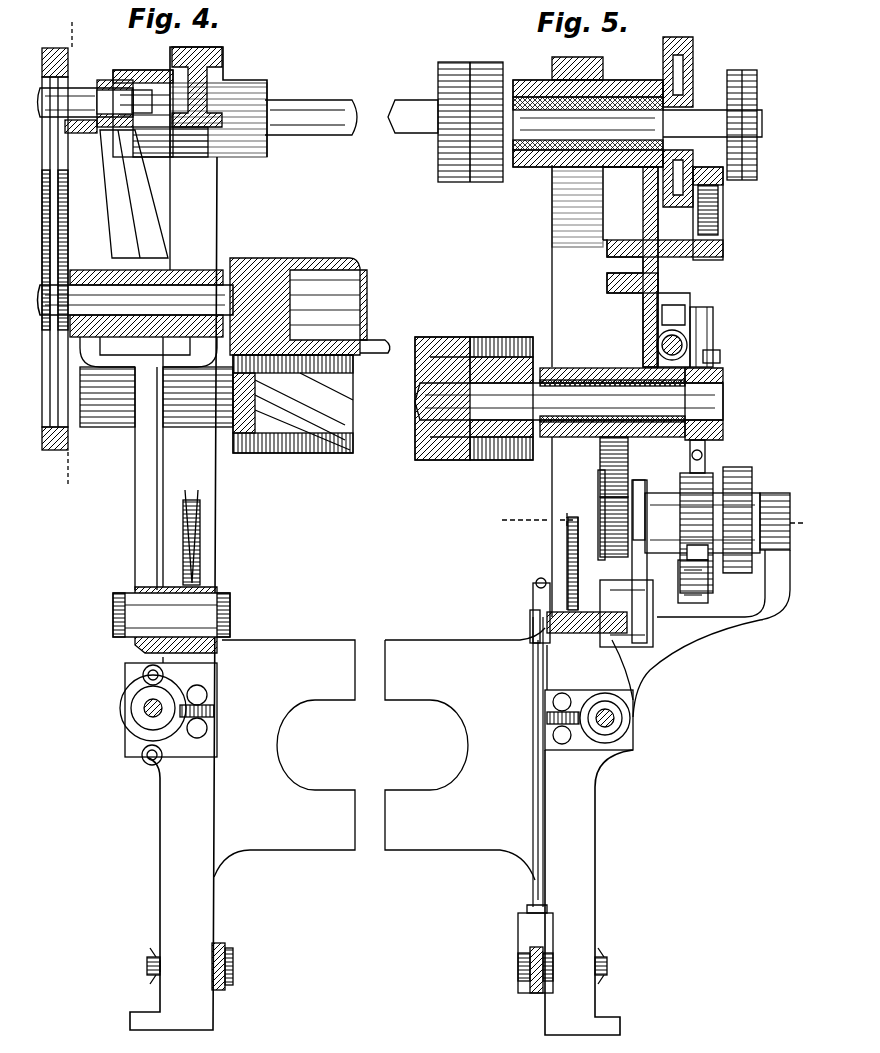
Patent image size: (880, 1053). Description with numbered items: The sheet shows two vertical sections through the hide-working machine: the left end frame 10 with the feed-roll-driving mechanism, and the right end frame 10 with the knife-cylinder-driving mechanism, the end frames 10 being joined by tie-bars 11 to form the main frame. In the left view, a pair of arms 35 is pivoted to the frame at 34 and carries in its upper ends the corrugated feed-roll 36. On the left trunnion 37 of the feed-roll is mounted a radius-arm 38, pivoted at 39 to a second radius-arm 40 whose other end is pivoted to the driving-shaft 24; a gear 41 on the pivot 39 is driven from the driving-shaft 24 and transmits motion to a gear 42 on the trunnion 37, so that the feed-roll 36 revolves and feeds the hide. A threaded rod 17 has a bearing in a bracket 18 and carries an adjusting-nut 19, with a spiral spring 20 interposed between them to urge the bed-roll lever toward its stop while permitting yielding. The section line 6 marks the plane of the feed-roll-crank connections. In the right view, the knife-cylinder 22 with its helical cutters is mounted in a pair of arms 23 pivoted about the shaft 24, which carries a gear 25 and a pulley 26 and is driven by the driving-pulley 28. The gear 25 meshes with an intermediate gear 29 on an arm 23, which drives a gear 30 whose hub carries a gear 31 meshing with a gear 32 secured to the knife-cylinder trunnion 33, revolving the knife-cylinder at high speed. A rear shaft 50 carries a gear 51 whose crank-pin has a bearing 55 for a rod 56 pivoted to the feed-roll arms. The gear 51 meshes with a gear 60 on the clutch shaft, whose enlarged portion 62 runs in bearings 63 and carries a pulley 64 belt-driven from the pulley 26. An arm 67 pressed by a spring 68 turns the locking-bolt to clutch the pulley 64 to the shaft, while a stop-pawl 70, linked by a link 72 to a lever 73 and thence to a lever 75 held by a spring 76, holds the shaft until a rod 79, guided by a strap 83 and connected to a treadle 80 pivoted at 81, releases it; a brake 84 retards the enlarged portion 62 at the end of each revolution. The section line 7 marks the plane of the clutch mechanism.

In FIG. 4, the section line 6 6 is at (66, 251).
In FIG. 5, the section line 7 7 is at (656, 521).
In FIG. 4, the end frame 10 is at (218, 526).
In FIG. 5, the end frame 10 is at (588, 832).
In FIG. 4, the tie-bar 11 is at (316, 648).
In FIG. 4, the threaded rod 17 is at (142, 712).
In FIG. 5, the threaded rod 17 is at (607, 740).
In FIG. 4, the bracket 18 is at (132, 742).
In FIG. 5, the bracket 18 is at (627, 740).
In FIG. 4, the adjusting-nut 19 is at (148, 764).
In FIG. 5, the spiral spring 20 is at (630, 719).
In FIG. 4, the knife-cylinder 22 is at (315, 453).
In FIG. 5, the knife-cylinder 22 is at (474, 411).
In FIG. 4, the arm 23 is at (140, 78).
In FIG. 5, the arm 23 is at (627, 88).
In FIG. 4, the shaft 24 is at (330, 104).
In FIG. 5, the gear 25 is at (678, 42).
In FIG. 5, the pulley 26 is at (745, 74).
In FIG. 5, the driving-pulley 28 is at (455, 66).
In FIG. 5, the intermediate gear 29 is at (720, 212).
In FIG. 5, the gear 30 is at (715, 316).
In FIG. 5, the gear 31 is at (722, 357).
In FIG. 5, the gear 32 is at (725, 381).
In FIG. 5, the knife-cylinder trunnion 33 is at (725, 404).
In FIG. 4, the pivot 34 is at (114, 621).
In FIG. 4, the arm 35 is at (137, 513).
In FIG. 4, the feed-roll 36 is at (292, 262).
In FIG. 4, the trunnion 37 is at (205, 292).
In FIG. 4, the radius-arm 38 is at (112, 216).
In FIG. 4, the pivot 39 is at (38, 102).
In FIG. 4, the second radius-arm 40 is at (100, 84).
In FIG. 4, the gear 41 is at (52, 52).
In FIG. 4, the gear 42 is at (52, 440).
In FIG. 4, the shaft 50 is at (385, 342).
In FIG. 5, the gear 51 is at (629, 452).
In FIG. 5, the bearing 55 is at (660, 320).
In FIG. 5, the rod 56 is at (690, 346).
In FIG. 5, the gear 60 is at (629, 475).
In FIG. 5, the enlarged portion 62 is at (708, 478).
In FIG. 5, the bearing 63 is at (775, 597).
In FIG. 5, the pulley 64 is at (755, 480).
In FIG. 5, the arm 67 is at (600, 505).
In FIG. 5, the spring 68 is at (645, 492).
In FIG. 5, the stop-pawl 70 is at (612, 632).
In FIG. 5, the link 72 is at (640, 572).
In FIG. 5, the lever 73 is at (625, 650).
In FIG. 5, the lever 75 is at (535, 595).
In FIG. 5, the spring 76 is at (538, 581).
In FIG. 5, the rod 79 is at (532, 878).
In FIG. 4, the treadle 80 is at (222, 946).
In FIG. 5, the treadle 80 is at (520, 985).
In FIG. 4, the pivot 81 is at (147, 965).
In FIG. 5, the pivot 81 is at (607, 962).
In FIG. 5, the strap 83 is at (560, 634).
In FIG. 5, the brake 84 is at (700, 588).